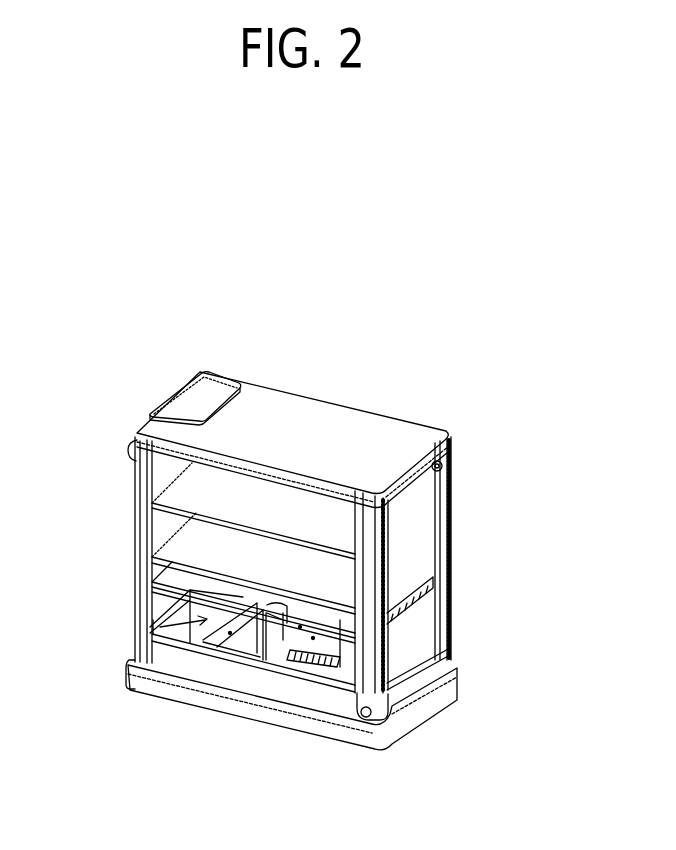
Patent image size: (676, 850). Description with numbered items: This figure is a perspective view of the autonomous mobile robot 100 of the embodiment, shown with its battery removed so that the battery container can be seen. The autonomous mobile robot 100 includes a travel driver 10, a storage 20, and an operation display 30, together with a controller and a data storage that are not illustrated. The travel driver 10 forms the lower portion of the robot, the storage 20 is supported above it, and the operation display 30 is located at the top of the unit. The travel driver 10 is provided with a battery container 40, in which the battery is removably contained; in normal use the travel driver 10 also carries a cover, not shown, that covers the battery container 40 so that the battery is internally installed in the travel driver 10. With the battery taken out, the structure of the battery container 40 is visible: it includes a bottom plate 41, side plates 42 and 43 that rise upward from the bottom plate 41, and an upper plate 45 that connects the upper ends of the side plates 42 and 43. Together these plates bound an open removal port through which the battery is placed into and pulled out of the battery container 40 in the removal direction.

The autonomous mobile robot 100 is at (388, 357).
The travel driver 10 is at (467, 627).
The storage 20 is at (467, 515).
The operation display 30 is at (192, 397).
The battery container 40 is at (153, 618).
The bottom plate 41 is at (224, 630).
The side plate 42 is at (186, 631).
The side plate 43 is at (255, 636).
The upper plate 45 is at (153, 584).